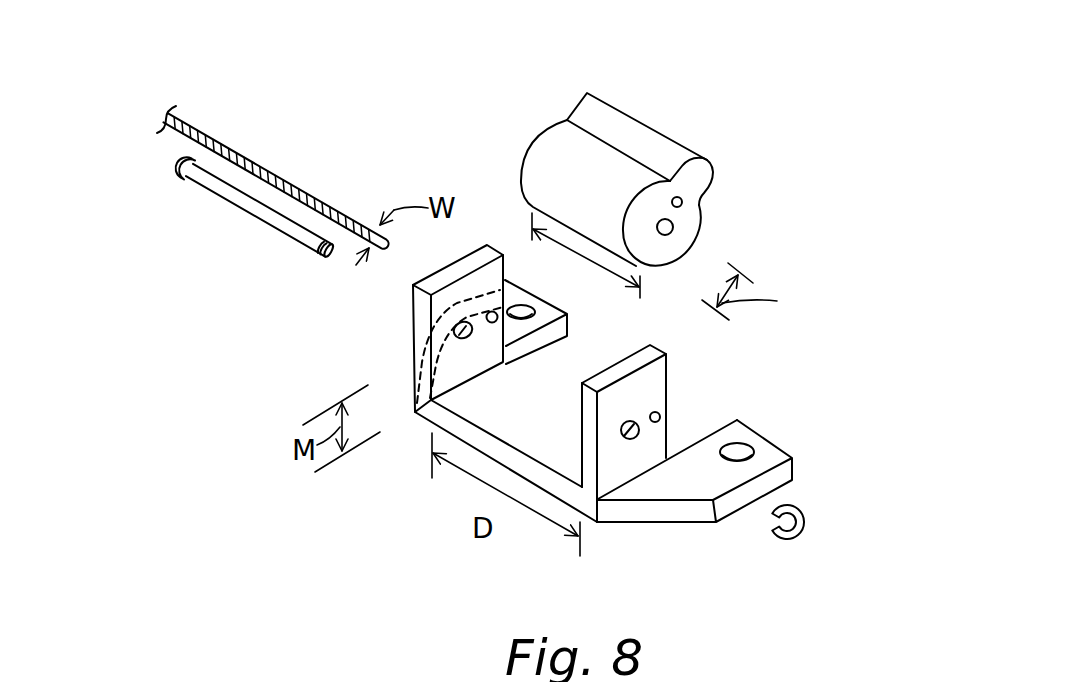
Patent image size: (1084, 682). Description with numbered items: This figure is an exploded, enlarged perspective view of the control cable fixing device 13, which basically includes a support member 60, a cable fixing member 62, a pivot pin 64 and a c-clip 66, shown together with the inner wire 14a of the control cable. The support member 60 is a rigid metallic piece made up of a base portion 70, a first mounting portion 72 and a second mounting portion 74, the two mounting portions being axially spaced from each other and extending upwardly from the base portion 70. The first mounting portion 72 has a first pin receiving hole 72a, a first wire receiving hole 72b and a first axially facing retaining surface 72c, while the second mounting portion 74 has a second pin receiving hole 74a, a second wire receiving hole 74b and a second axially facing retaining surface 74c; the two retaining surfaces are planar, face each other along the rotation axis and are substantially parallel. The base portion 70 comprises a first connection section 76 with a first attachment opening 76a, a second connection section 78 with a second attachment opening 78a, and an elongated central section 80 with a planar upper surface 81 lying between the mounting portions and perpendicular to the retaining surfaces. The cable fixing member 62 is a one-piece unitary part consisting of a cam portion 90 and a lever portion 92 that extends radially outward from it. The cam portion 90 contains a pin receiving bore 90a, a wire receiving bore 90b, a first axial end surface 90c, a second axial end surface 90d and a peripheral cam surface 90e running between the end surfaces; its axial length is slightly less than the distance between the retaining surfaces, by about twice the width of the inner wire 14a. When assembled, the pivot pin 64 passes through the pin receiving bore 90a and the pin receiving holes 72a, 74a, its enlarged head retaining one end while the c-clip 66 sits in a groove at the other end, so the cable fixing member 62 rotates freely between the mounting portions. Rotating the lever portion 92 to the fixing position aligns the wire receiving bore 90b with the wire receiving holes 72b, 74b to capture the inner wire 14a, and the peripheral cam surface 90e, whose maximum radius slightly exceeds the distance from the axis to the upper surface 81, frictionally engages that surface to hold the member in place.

The control cable fixing device 13 is at (746, 131).
The inner wire 14a is at (288, 183).
The support member 60 is at (597, 373).
The cable fixing member 62 is at (668, 168).
The pivot pin 64 is at (223, 201).
The c-clip 66 is at (801, 513).
The base portion 70 is at (738, 487).
The first mounting portion 72 is at (681, 434).
The first pin receiving hole 72a is at (634, 440).
The first wire receiving hole 72b is at (662, 420).
The first axially facing retaining surface 72c is at (628, 352).
The second mounting portion 74 is at (440, 340).
The second pin receiving hole 74a is at (470, 338).
The second wire receiving hole 74b is at (497, 311).
The second axially facing retaining surface 74c is at (433, 413).
The first connection section 76 is at (768, 452).
The first attachment opening 76a is at (722, 461).
The second connection section 78 is at (501, 280).
The second attachment opening 78a is at (560, 313).
The elongated central section 80 is at (562, 493).
The upper surface 81 is at (560, 442).
The cam portion 90 is at (667, 168).
The pin receiving bore 90a is at (663, 219).
The wire receiving bore 90b is at (679, 197).
The first axial end surface 90c is at (682, 241).
The second axial end surface 90d is at (531, 147).
The peripheral cam surface 90e is at (613, 202).
The lever portion 92 is at (714, 178).